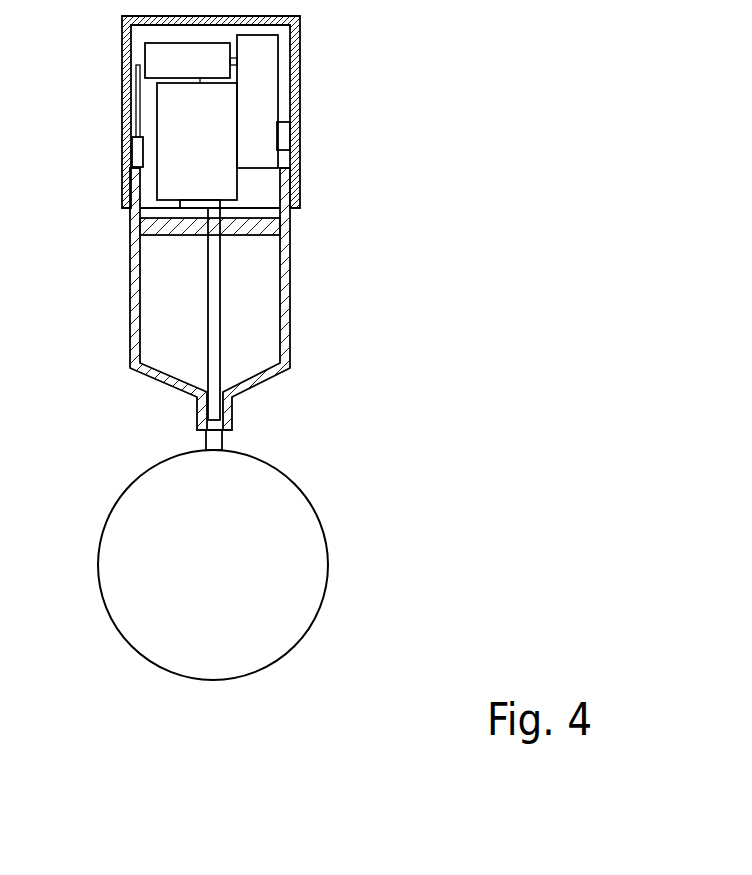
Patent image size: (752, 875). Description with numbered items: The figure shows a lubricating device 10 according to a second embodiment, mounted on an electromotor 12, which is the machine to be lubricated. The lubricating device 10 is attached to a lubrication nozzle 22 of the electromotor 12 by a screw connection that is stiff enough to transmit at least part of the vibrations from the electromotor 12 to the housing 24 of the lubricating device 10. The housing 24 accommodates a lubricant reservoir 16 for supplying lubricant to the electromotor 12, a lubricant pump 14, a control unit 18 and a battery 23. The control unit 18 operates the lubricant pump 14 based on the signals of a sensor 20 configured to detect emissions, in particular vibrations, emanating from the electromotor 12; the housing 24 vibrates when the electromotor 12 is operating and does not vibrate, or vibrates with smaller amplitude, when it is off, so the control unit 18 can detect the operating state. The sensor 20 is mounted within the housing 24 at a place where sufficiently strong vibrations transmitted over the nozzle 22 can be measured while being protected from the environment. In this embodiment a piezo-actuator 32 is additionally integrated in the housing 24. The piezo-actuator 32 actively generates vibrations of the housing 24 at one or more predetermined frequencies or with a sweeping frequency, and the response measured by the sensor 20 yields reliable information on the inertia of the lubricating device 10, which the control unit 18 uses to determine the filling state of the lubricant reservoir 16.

The lubricating device 10 is at (315, 157).
The electromotor 12 is at (228, 490).
The lubricant pump 14 is at (188, 150).
The lubricant reservoir 16 is at (192, 312).
The control unit 18 is at (175, 62).
The sensor 20 is at (138, 156).
The lubrication nozzle 22 is at (207, 441).
The battery 23 is at (258, 102).
The housing 24 is at (283, 258).
The piezo-actuator 32 is at (288, 128).